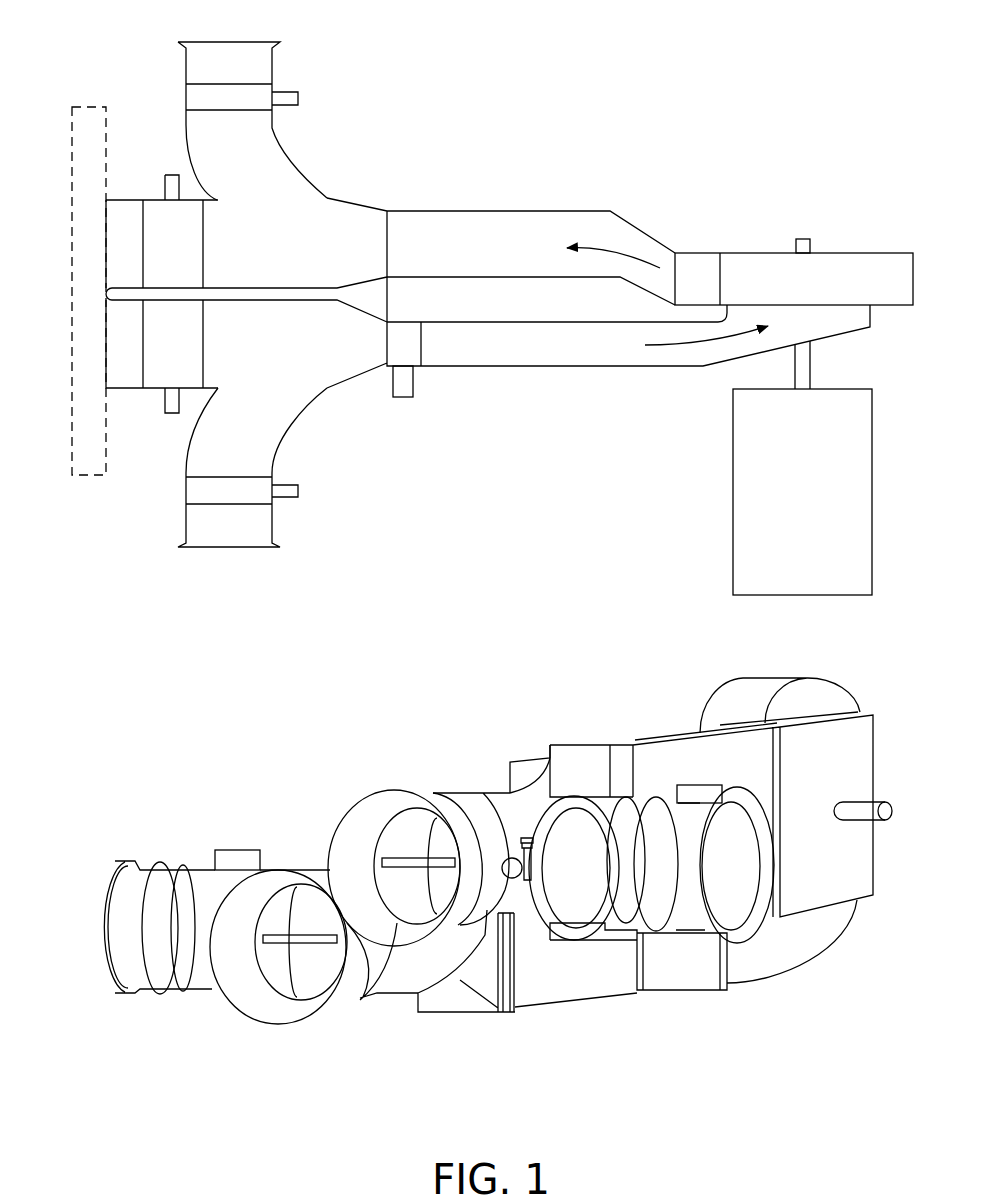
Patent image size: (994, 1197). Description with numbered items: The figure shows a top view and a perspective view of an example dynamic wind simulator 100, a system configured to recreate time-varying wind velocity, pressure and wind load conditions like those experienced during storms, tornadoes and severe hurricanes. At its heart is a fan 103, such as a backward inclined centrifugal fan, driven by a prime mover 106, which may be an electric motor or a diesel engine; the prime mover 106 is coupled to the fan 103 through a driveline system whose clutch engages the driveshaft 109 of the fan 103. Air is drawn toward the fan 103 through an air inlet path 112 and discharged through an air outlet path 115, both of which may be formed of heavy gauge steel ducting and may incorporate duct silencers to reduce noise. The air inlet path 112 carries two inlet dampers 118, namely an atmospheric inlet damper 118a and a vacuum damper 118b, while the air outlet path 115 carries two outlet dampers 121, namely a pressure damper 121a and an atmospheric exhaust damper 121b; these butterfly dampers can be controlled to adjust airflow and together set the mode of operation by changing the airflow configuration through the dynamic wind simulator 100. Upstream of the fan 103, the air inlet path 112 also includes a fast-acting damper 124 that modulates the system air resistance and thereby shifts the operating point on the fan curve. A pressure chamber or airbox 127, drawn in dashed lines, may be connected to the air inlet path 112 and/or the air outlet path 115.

The dynamic wind simulator 100 is at (492, 573).
The fan 103 is at (835, 290).
The prime mover 106 is at (821, 504).
The driveshaft 109 is at (803, 240).
The air inlet path 112 is at (470, 465).
The air outlet path 115 is at (470, 120).
The inlet dampers 118 is at (630, 913).
The atmospheric inlet damper 118a is at (246, 502).
The vacuum damper 118b is at (192, 355).
The outlet dampers 121 is at (352, 997).
The pressure damper 121a is at (192, 253).
The atmospheric exhaust damper 121b is at (246, 107).
The fast-acting damper 124 is at (405, 365).
The pressure chamber 127 is at (90, 475).